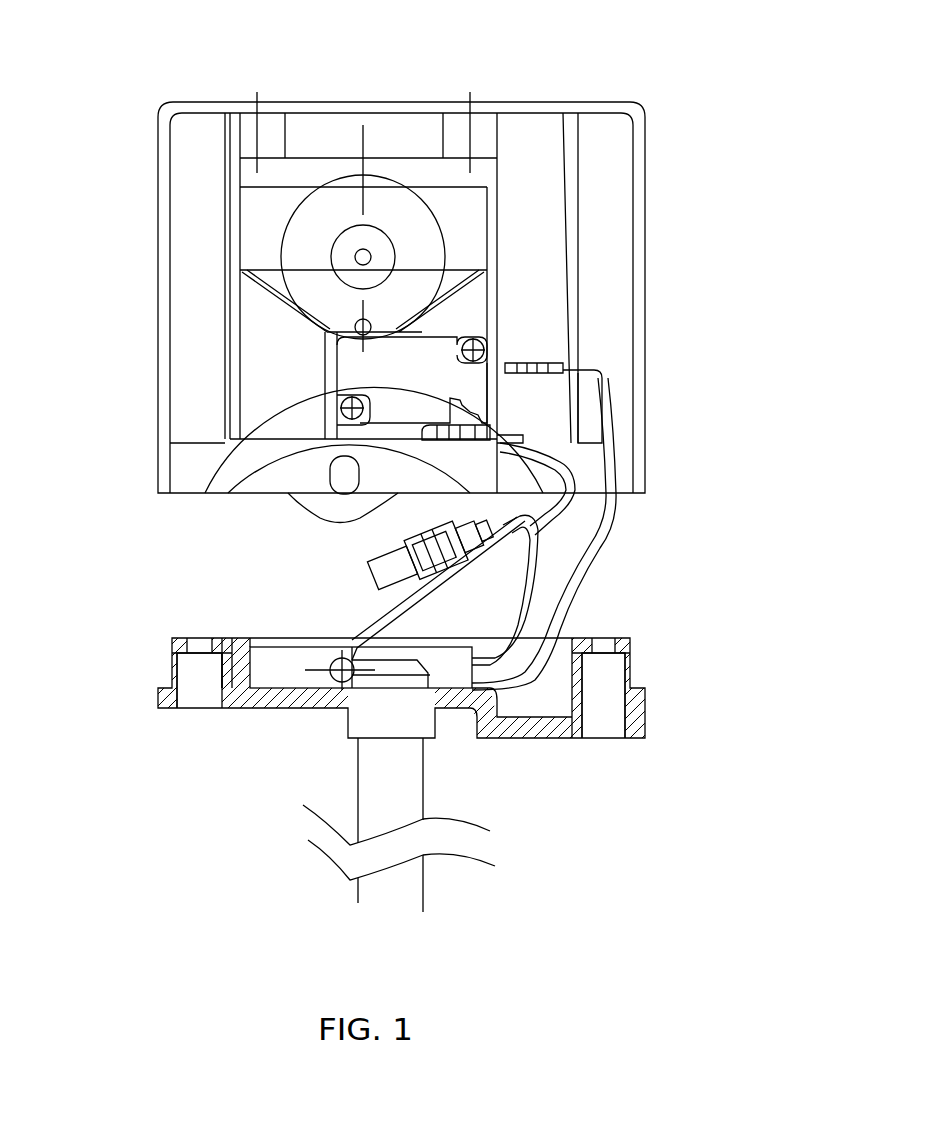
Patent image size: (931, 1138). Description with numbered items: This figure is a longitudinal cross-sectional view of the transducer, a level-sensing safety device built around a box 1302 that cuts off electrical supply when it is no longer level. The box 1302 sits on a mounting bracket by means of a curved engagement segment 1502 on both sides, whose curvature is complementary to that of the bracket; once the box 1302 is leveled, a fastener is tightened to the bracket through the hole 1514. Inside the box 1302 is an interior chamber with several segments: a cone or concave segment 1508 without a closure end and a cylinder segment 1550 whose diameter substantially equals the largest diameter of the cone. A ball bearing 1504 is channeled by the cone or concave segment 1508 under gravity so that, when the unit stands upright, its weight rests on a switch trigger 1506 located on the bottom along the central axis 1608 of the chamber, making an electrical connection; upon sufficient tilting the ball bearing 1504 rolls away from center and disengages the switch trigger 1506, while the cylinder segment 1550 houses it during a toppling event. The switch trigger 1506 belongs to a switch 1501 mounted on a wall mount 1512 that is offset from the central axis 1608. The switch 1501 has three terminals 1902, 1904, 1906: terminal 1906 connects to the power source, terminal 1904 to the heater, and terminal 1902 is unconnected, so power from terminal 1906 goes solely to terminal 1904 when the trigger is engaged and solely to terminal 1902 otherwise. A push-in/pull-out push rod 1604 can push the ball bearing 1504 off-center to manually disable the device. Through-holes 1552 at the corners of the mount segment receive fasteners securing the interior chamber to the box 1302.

The box 1302 is at (596, 102).
The ball bearing 1504 is at (417, 230).
The central axis 1608 is at (363, 132).
The cylinder segment 1550 is at (470, 240).
The push rod 1604 is at (380, 258).
The cone or concave segment 1508 is at (273, 282).
The switch trigger 1506 is at (332, 332).
The switch 1501 is at (429, 373).
The terminal 1902 is at (530, 365).
The terminal 1904 is at (545, 400).
The wall mount 1512 is at (492, 425).
The terminal 1906 is at (497, 423).
The curved engagement segment 1502 is at (292, 477).
The hole 1514 is at (342, 473).
The through-holes 1552 is at (205, 690).